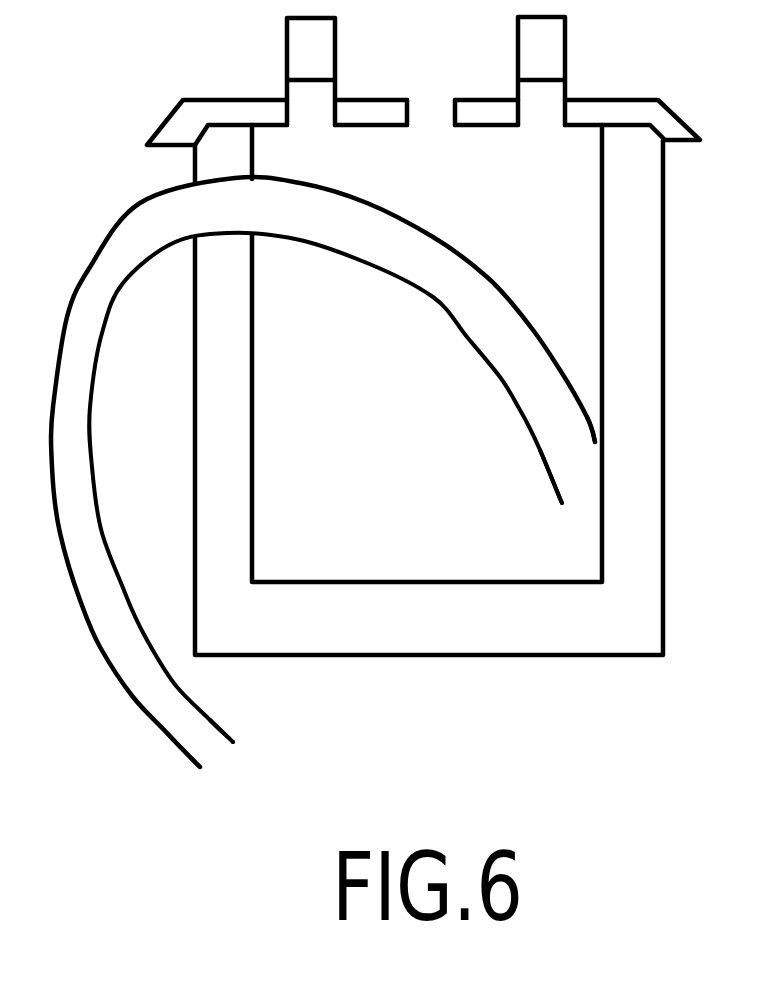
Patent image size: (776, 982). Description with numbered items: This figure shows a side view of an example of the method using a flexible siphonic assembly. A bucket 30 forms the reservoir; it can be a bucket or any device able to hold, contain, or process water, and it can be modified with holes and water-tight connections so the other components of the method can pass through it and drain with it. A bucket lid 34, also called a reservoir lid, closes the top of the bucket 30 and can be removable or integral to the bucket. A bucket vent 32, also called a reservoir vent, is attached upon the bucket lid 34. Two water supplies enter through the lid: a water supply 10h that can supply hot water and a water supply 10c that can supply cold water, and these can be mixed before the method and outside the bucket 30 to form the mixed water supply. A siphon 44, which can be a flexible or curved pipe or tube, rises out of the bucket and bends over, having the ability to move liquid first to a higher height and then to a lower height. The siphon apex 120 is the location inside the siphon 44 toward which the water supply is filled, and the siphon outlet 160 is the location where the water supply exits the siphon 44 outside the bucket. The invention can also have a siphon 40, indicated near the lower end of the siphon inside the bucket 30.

The water supply 10h is at (287, 33).
The water supply 10c is at (565, 32).
The bucket vent 32 is at (432, 118).
The bucket lid 34 is at (172, 120).
The bucket 30 is at (429, 390).
The siphon 44 is at (367, 232).
The siphon 40 is at (585, 477).
The siphon apex 120 is at (323, 472).
The siphon outlet 160 is at (220, 753).